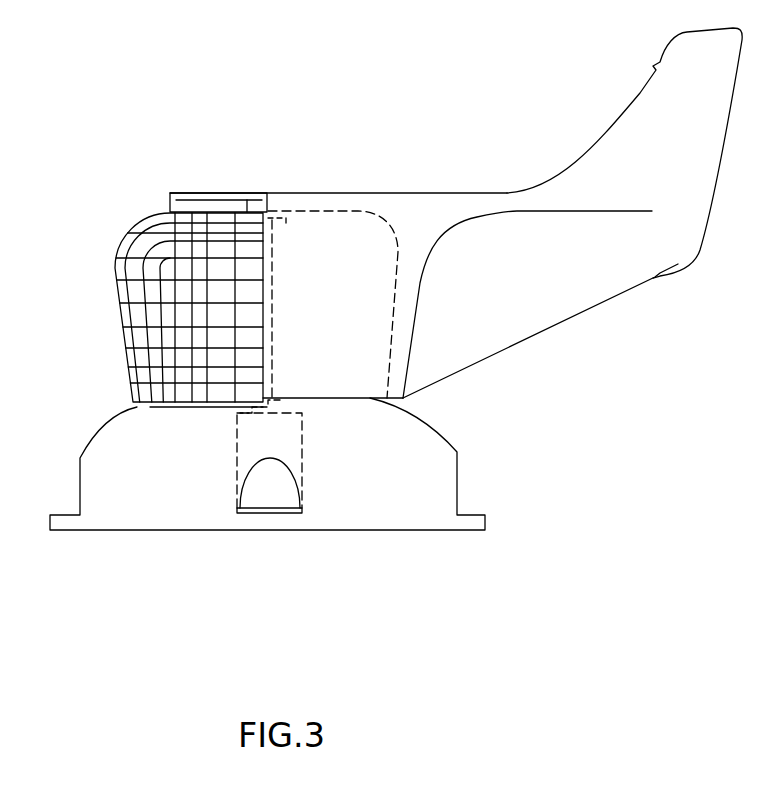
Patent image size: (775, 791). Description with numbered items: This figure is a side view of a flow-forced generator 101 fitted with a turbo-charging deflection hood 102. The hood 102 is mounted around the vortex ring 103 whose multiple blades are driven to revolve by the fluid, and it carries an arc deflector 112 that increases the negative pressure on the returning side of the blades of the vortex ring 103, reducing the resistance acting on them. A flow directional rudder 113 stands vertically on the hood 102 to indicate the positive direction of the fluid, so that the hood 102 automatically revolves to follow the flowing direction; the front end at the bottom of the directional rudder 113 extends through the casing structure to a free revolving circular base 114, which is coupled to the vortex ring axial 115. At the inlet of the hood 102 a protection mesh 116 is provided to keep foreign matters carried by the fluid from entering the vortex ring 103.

The generator 101 is at (308, 460).
The turbo-charging deflection hood 102 is at (377, 193).
The vortex ring 103 is at (145, 290).
The arc deflector 112 is at (301, 275).
The flow directional rudder 113 is at (658, 90).
The free revolving circular base 114 is at (455, 443).
The vortex ring axial 115 is at (225, 193).
The protection mesh 116 is at (130, 243).